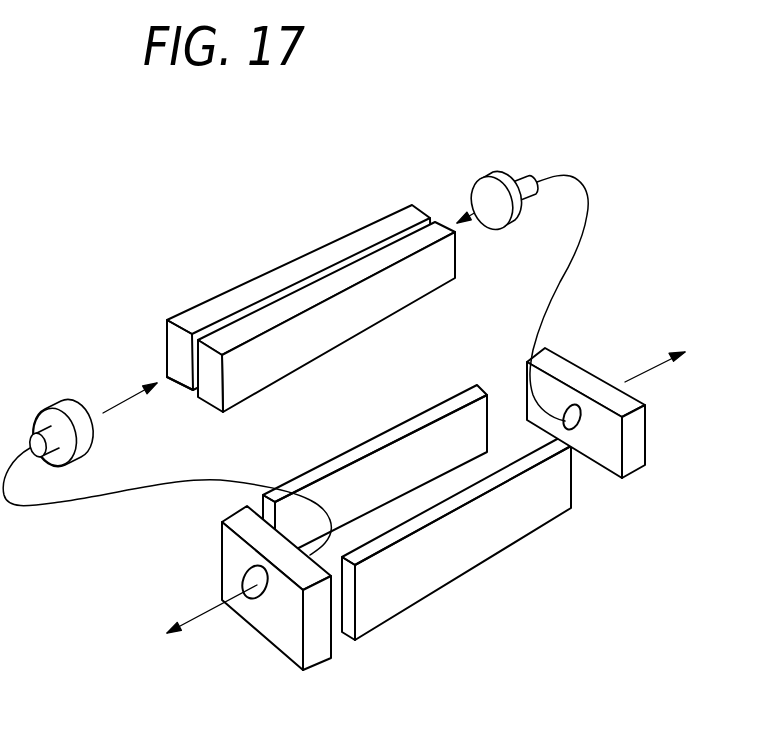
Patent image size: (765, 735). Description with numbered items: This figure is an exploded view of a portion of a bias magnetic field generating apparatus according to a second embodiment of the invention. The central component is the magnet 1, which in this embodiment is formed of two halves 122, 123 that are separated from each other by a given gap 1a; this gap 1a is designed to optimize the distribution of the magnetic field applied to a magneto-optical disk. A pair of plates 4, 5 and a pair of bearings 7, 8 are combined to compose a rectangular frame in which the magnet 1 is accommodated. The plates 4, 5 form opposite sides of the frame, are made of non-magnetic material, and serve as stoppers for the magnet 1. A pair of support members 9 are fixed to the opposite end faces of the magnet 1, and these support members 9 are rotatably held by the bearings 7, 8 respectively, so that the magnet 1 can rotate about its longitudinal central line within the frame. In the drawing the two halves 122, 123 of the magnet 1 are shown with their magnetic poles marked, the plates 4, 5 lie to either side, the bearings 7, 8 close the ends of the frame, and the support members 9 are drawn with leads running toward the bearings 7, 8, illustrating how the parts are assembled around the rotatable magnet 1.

The magnet 1 is at (253, 262).
The gap 1a is at (193, 392).
The half of magnet 122 is at (327, 253).
The half of magnet 123 is at (390, 295).
The plate 4 is at (492, 543).
The plate 5 is at (353, 453).
The bearing 7 is at (638, 425).
The bearing 8 is at (275, 630).
The support member 9 is at (505, 170).